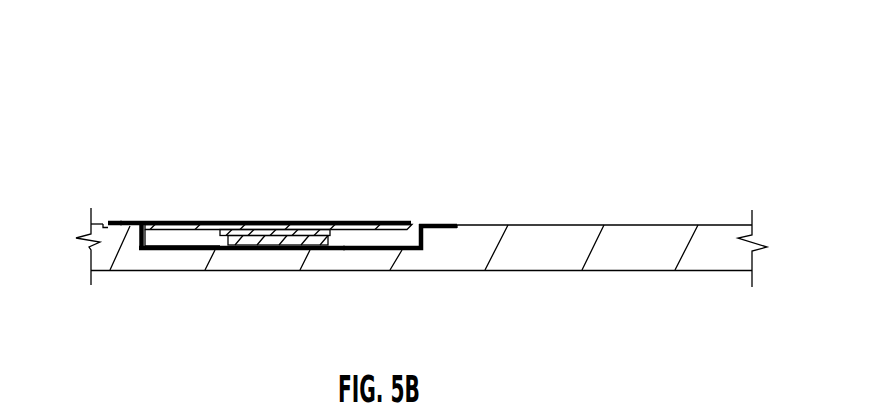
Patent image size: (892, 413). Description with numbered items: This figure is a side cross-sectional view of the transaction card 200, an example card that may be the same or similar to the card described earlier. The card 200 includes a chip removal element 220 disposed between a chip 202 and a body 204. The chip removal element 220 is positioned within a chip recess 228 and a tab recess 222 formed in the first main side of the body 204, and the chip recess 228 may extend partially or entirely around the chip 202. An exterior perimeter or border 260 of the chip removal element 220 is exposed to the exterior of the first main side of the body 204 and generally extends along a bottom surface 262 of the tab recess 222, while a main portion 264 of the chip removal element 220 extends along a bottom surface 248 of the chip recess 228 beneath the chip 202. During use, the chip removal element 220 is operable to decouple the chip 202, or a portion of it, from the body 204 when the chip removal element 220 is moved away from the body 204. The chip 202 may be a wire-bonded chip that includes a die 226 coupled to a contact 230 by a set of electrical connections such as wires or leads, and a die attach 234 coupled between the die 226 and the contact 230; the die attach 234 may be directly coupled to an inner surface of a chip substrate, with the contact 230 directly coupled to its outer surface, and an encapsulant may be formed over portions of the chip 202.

The transaction card 200 is at (632, 152).
The chip 202 is at (267, 206).
The body 204 is at (708, 237).
The chip removal element 220 is at (178, 256).
The tab recess 222 is at (453, 225).
The die 226 is at (265, 245).
The chip recess 228 is at (385, 226).
The contact 230 is at (183, 221).
The die attach 234 is at (308, 226).
The bottom surface of the chip recess 248 is at (408, 250).
The exterior perimeter or border 260 is at (110, 228).
The bottom surface of the tab recess 262 is at (104, 227).
The main portion 264 is at (346, 250).